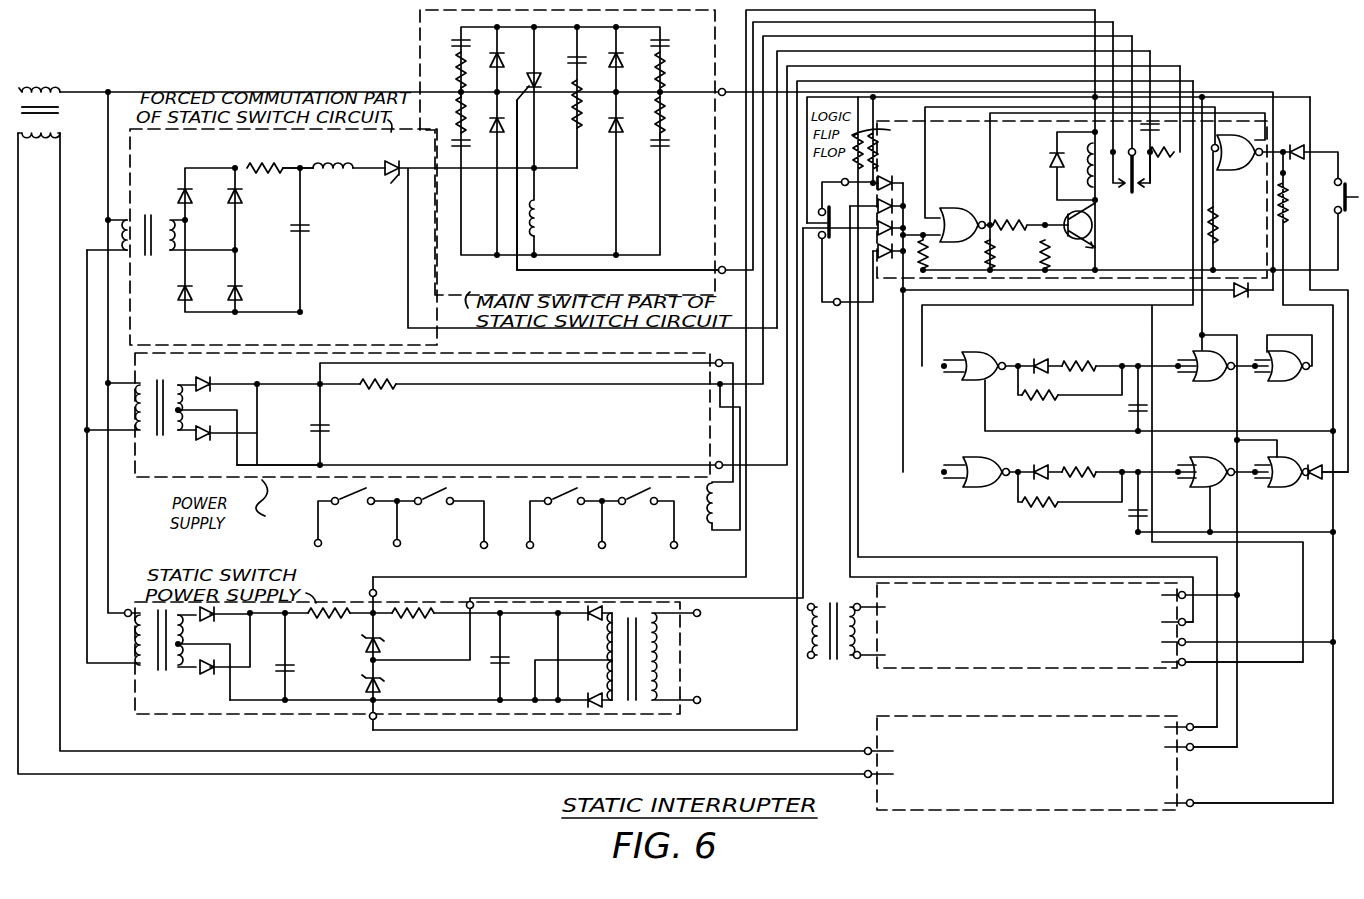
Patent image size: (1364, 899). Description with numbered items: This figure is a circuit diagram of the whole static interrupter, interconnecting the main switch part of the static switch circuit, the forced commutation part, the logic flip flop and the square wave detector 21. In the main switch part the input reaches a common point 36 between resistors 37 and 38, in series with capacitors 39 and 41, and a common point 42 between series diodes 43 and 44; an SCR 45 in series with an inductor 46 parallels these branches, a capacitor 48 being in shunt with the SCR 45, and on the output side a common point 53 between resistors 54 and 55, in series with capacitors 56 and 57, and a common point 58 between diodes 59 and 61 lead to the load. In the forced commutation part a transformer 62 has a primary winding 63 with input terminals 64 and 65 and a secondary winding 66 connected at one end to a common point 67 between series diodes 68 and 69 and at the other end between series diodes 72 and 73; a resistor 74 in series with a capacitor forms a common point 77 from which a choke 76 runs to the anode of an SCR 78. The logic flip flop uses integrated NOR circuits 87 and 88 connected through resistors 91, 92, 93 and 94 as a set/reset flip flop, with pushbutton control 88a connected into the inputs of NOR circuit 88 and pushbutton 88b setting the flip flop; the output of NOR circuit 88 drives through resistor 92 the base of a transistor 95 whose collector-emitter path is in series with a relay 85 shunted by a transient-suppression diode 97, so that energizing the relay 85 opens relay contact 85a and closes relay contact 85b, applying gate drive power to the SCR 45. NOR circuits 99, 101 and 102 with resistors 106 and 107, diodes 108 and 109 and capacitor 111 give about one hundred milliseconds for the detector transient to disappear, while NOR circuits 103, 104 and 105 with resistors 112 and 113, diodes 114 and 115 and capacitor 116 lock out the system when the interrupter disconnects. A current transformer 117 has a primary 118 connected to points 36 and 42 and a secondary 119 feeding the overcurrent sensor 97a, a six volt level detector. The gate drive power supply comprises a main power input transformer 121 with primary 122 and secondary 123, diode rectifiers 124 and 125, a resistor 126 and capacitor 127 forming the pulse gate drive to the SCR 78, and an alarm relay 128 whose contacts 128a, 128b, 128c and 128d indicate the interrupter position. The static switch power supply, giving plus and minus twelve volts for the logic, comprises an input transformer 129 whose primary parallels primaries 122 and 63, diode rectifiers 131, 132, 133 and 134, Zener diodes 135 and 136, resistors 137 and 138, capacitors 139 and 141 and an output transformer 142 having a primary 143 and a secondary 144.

The current transformer 117 is at (36, 86).
The primary 118 is at (60, 92).
The secondary 119 is at (40, 155).
The transformer 62 is at (155, 223).
The primary winding 63 is at (125, 238).
The input terminal 64 is at (123, 218).
The input terminal 65 is at (123, 253).
The secondary winding 66 is at (168, 252).
The common point 67 is at (193, 235).
The diode 68 is at (182, 194).
The diode 69 is at (176, 295).
The diode 72 is at (243, 196).
The diode 73 is at (243, 293).
The resistor 74 is at (260, 168).
The choke 76 is at (333, 154).
The common point 77 is at (301, 154).
The silicon controlled rectifier 78 is at (397, 162).
The common point 36 is at (461, 92).
The resistor 37 is at (448, 72).
The resistor 38 is at (447, 115).
The capacitor 39 is at (458, 43).
The capacitor 41 is at (462, 146).
The common point 42 is at (522, 81).
The diode 43 is at (486, 72).
The diode 44 is at (485, 127).
The silicon controlled rectifier 45 is at (529, 86).
The inductor 46 is at (540, 230).
The capacitor 48 is at (570, 60).
The common point 53 is at (666, 95).
The resistor 54 is at (679, 70).
The resistor 55 is at (670, 132).
The capacitor 56 is at (668, 43).
The capacitor 57 is at (668, 145).
The common point 58 is at (590, 104).
The diode 59 is at (611, 62).
The diode 61 is at (612, 132).
The main power input transformer 121 is at (134, 398).
The primary 122 is at (160, 420).
The secondary 123 is at (186, 405).
The diode rectifier 124 is at (205, 380).
The diode rectifier 125 is at (203, 435).
The resistor 126 is at (380, 387).
The capacitor 127 is at (330, 428).
The relay 128 is at (706, 525).
The relay contact 128a is at (640, 518).
The relay contact 128b is at (566, 518).
The relay contact 128c is at (442, 518).
The relay contact 128d is at (358, 517).
The input transformer 129 is at (180, 697).
The diode rectifier 131 is at (115, 639).
The diode rectifier 132 is at (186, 631).
The diode rectifier 133 is at (589, 622).
The diode rectifier 134 is at (596, 694).
The Zener diode 135 is at (383, 645).
The Zener diode 136 is at (383, 685).
The resistor 137 is at (329, 618).
The resistor 138 is at (415, 613).
The capacitor 139 is at (280, 668).
The capacitor 141 is at (495, 661).
The output transformer 142 is at (631, 645).
The primary 143 is at (573, 669).
The secondary 144 is at (658, 635).
The relay 85 is at (1076, 172).
The relay contact 85a is at (1146, 190).
The relay contact 85b is at (1123, 188).
The NOR circuit 87 is at (1303, 86).
The NOR circuit 88 is at (976, 216).
The pushbutton control 88a is at (840, 254).
The pushbutton 88b is at (1339, 178).
The resistor 91 is at (1216, 230).
The resistor 92 is at (1019, 218).
The resistor 93 is at (1047, 255).
The resistor 94 is at (996, 250).
The transistor 95 is at (1098, 229).
The diode 97 is at (1051, 157).
The NOR circuit 99 is at (1000, 343).
The NOR circuit 101 is at (1195, 390).
The NOR circuit 102 is at (1282, 390).
The NOR circuit 103 is at (997, 502).
The NOR circuit 104 is at (1192, 492).
The NOR circuit 105 is at (1282, 492).
The resistor 106 is at (1085, 362).
The resistor 107 is at (1058, 396).
The diode 108 is at (1045, 359).
The diode 109 is at (1245, 296).
The capacitor 111 is at (1128, 407).
The resistor 112 is at (1089, 467).
The resistor 113 is at (1036, 503).
The diode 114 is at (1043, 465).
The diode 115 is at (1317, 466).
The capacitor 116 is at (1120, 518).
The square wave detector 21 is at (908, 668).
The overcurrent sensor 97a is at (1105, 782).